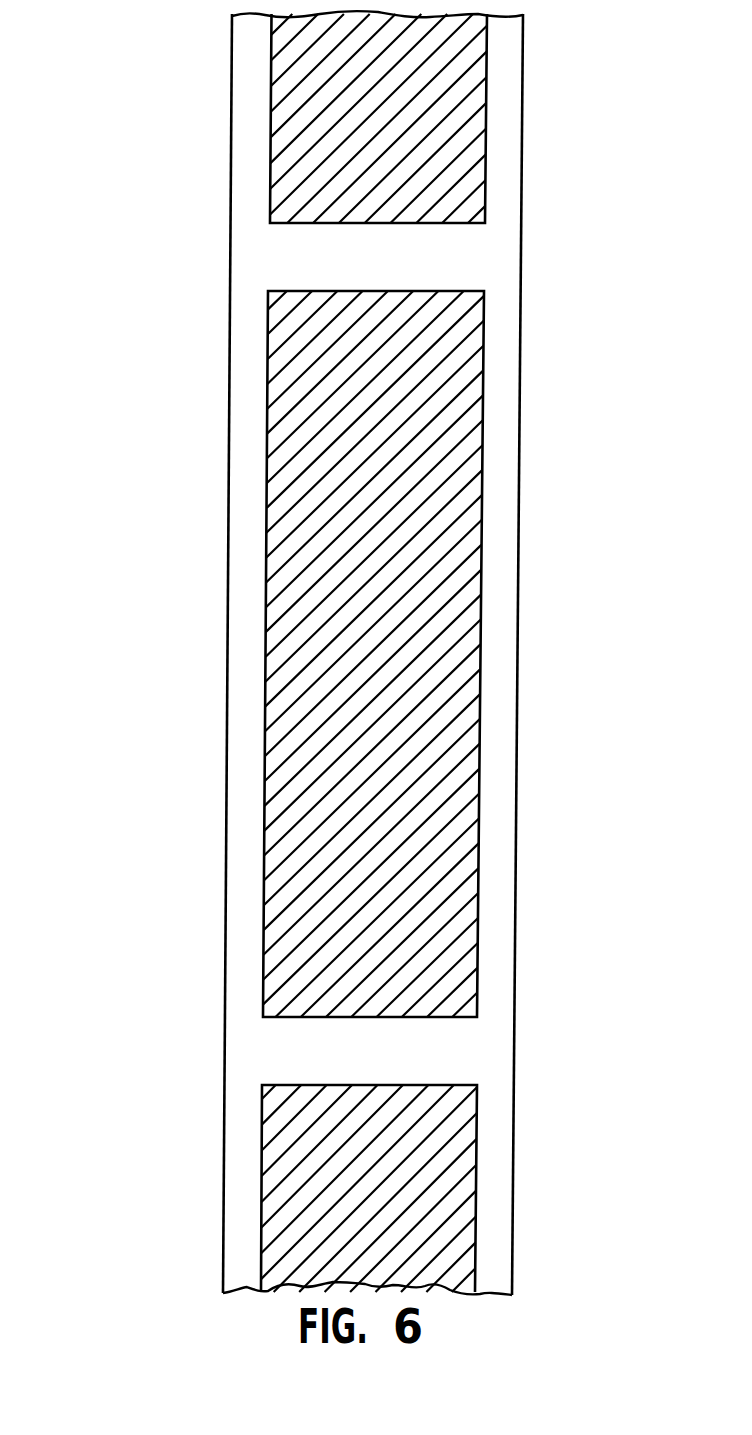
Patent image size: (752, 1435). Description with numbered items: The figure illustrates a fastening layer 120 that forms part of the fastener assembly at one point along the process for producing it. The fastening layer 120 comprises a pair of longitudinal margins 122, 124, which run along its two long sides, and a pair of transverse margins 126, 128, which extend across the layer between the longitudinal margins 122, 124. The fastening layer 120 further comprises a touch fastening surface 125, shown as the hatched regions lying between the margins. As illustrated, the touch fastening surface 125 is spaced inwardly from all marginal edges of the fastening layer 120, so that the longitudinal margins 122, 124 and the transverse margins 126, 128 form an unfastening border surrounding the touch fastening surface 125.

The fastening layer 120 is at (197, 380).
The longitudinal margin 122 is at (248, 588).
The longitudinal margin 124 is at (497, 837).
The touch fastening surface 125 is at (455, 97).
The transverse margin 126 is at (402, 275).
The transverse margin 128 is at (396, 1066).